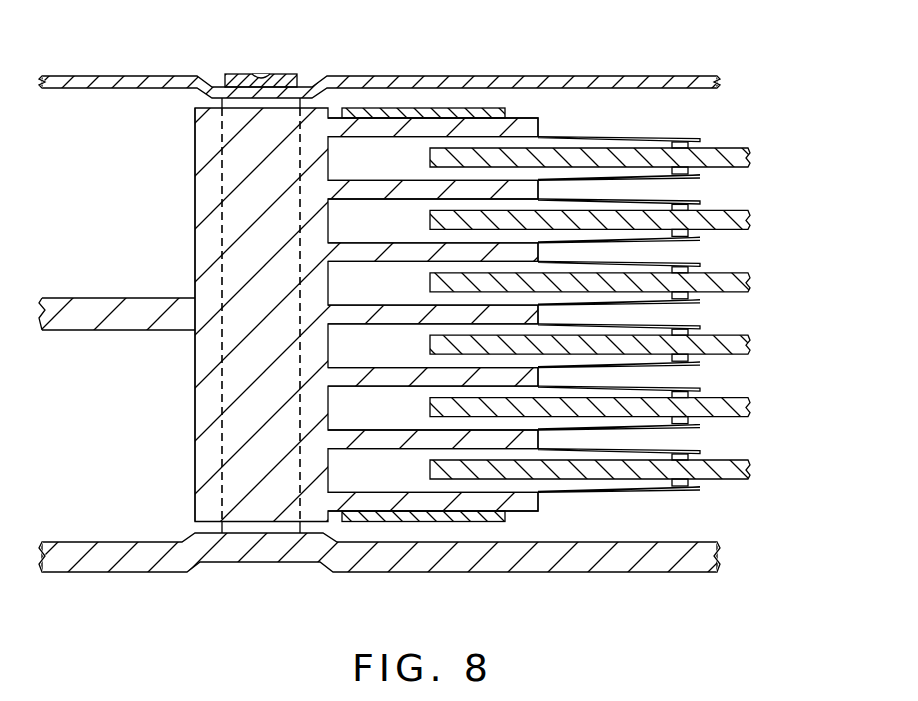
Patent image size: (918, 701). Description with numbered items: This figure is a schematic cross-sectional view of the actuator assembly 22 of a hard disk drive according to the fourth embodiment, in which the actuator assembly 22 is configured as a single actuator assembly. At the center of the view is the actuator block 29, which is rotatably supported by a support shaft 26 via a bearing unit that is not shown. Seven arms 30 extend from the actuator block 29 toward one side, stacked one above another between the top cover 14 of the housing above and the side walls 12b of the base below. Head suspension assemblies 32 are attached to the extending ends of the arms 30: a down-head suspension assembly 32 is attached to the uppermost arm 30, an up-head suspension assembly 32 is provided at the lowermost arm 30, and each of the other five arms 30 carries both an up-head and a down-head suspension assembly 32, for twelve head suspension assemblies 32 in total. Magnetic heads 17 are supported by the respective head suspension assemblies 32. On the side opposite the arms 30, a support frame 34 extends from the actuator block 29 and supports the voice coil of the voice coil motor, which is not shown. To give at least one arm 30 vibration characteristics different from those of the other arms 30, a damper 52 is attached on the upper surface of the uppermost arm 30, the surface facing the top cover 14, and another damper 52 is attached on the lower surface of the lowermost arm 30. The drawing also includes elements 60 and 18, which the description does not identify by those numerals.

The top cover 14 is at (596, 76).
The seal member 60 is at (283, 77).
The actuator assembly 22 is at (174, 160).
The actuator block 29 is at (195, 458).
The arms 30 is at (541, 122).
The damper 52 is at (398, 108).
The head suspension assemblies 32 is at (612, 137).
The magnetic heads 17 is at (676, 141).
The counter electrode plate 18 is at (725, 156).
The support frame 34 is at (88, 306).
The side walls 12b is at (612, 556).
The support shaft 26 is at (262, 525).